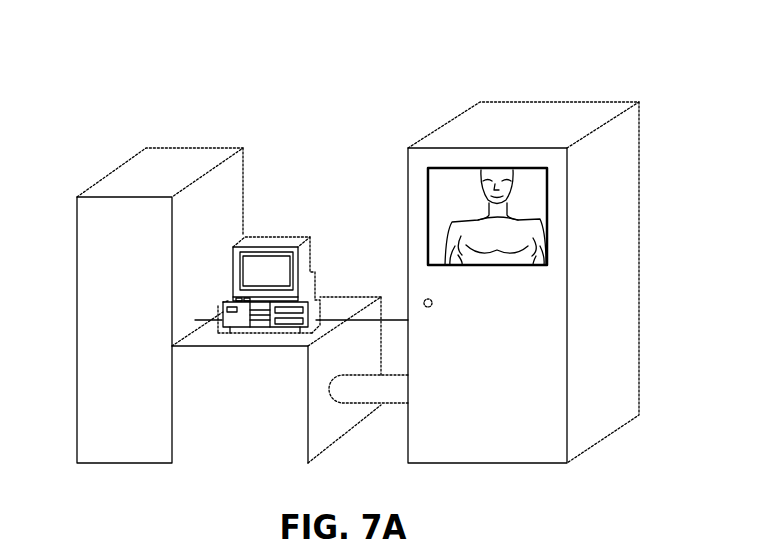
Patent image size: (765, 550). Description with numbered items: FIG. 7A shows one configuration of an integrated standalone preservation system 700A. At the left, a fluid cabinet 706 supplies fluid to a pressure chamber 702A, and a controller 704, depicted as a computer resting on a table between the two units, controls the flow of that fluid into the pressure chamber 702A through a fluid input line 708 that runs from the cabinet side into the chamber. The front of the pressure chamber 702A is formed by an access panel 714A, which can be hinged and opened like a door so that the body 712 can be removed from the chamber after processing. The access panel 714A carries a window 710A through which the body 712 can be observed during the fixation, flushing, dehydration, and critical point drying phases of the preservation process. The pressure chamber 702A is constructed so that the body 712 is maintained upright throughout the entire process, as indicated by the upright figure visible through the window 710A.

The preservation system 700A is at (108, 104).
The pressure chamber 702A is at (630, 136).
The controller 704 is at (277, 242).
The fluid cabinet 706 is at (88, 230).
The fluid input line 708 is at (395, 394).
The window 710A is at (460, 170).
The body 712 is at (523, 228).
The access panel 714A is at (525, 448).